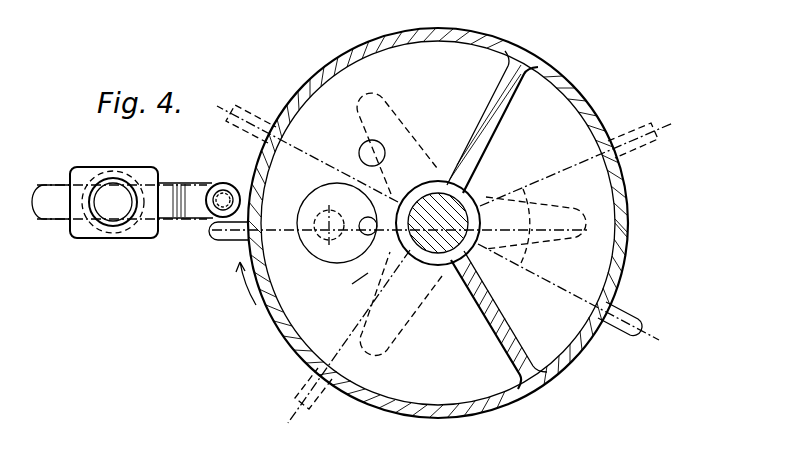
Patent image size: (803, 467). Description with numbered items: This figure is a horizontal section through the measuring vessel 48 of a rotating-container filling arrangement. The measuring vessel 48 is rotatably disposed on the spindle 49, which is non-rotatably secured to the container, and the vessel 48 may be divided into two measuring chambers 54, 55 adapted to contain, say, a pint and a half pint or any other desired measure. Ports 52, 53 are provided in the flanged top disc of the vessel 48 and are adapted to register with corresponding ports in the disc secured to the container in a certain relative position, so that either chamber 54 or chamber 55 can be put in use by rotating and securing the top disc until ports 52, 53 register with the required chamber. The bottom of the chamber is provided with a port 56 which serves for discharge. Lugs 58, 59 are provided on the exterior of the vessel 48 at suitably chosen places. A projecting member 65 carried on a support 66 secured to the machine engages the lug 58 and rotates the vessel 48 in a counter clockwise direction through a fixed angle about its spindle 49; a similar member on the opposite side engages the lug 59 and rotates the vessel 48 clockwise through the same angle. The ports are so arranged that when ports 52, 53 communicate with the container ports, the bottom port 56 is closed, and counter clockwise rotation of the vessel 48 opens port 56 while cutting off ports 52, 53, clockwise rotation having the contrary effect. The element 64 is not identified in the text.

The measuring vessel 48 is at (598, 127).
The spindle 49 is at (478, 188).
The port 52 is at (330, 233).
The port 53 is at (370, 216).
The measuring chamber 54 is at (437, 362).
The measuring chamber 55 is at (537, 310).
The port 56 is at (358, 153).
The lug 58 is at (226, 240).
The lug 59 is at (633, 326).
The blade 64 is at (430, 157).
The projecting member 65 is at (214, 214).
The support 66 is at (122, 210).